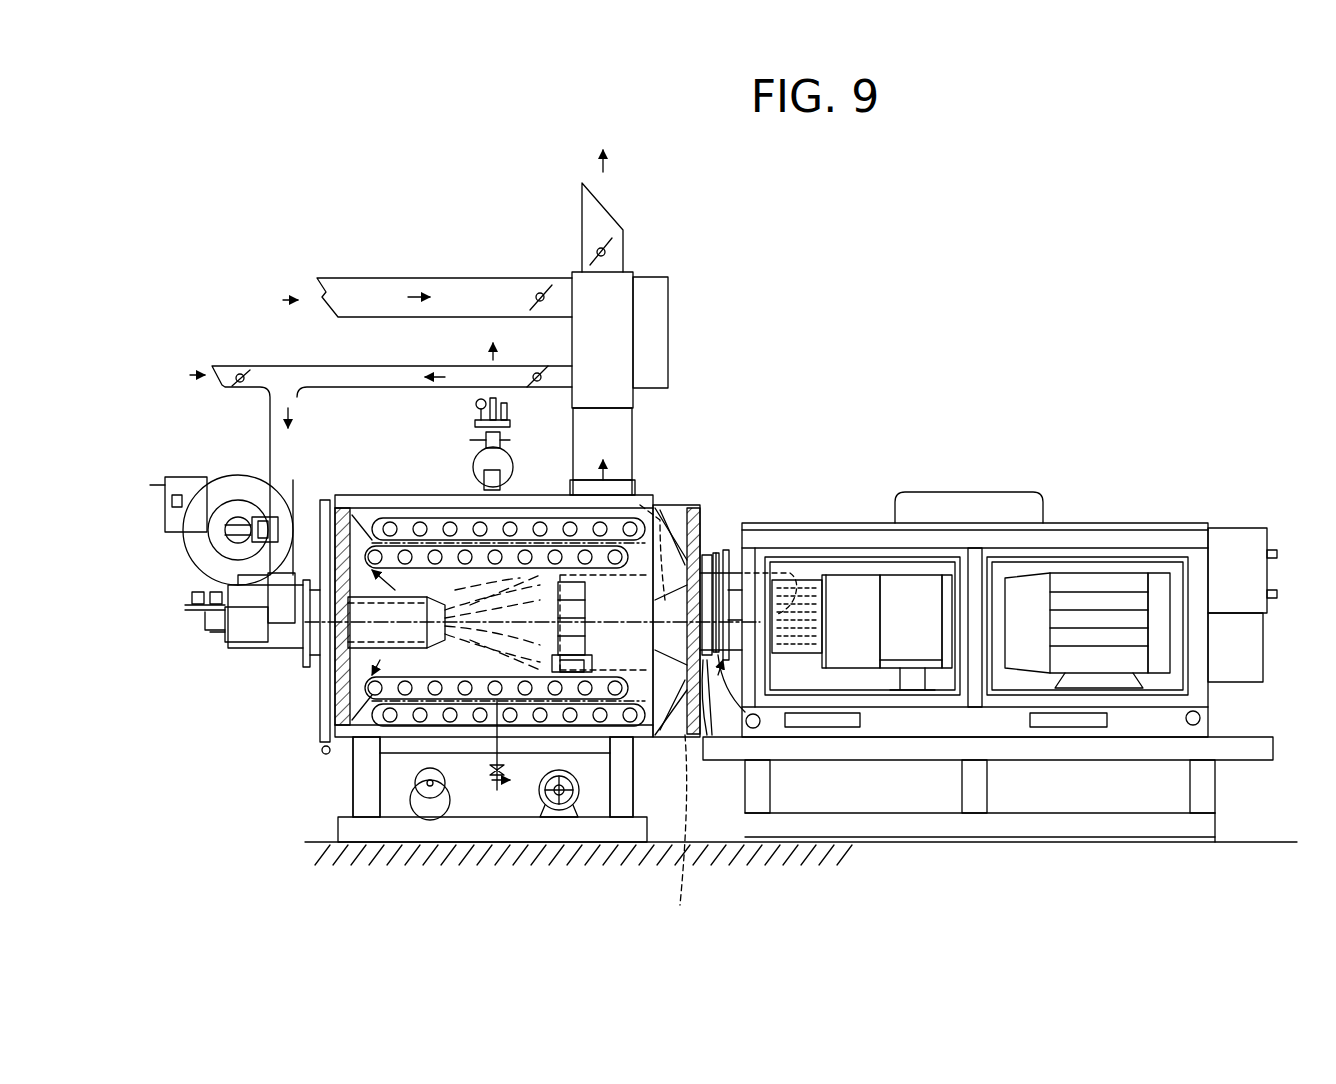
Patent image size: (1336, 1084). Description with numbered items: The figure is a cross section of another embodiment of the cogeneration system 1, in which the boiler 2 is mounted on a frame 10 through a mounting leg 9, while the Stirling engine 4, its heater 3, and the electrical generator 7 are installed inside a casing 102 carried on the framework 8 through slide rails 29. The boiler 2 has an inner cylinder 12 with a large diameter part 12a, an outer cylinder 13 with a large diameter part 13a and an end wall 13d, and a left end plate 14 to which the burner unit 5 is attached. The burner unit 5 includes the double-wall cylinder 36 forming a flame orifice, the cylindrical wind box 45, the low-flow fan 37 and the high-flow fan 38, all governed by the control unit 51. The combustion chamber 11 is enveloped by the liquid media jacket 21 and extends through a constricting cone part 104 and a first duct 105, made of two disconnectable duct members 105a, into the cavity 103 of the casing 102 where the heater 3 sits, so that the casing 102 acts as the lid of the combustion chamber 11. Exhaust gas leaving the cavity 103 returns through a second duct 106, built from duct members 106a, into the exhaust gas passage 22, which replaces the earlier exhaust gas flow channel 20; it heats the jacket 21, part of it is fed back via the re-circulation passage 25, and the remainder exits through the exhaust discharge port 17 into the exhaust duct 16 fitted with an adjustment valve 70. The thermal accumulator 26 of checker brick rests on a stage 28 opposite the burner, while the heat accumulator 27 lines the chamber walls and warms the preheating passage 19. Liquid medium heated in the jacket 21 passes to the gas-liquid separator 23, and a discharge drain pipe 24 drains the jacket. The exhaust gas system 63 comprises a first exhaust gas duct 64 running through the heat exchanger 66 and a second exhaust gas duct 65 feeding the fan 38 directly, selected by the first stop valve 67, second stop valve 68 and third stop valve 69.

The cogeneration system 1 is at (1052, 218).
The boiler 2 is at (305, 768).
The heater 3 is at (835, 580).
The Stirling engine 4 is at (912, 603).
The burner unit 5 is at (447, 595).
The electrical generator 7 is at (1103, 598).
The framework 8 is at (1203, 795).
The mounting leg 9 is at (355, 806).
The frame 10 is at (1265, 838).
The combustion chamber 11 is at (632, 745).
The inner cylinder 12 is at (465, 745).
The large diameter part of inner cylinder 12a is at (390, 730).
The outer cylinder 13 is at (535, 487).
The large diameter part of outer cylinder 13a is at (530, 755).
The end wall of outer cylinder 13d is at (707, 690).
The left end plate 14 is at (318, 728).
The exhaust duct 16 is at (623, 228).
The exhaust discharge port 17 is at (612, 490).
The preheating passage 19 is at (672, 515).
The exhaust gas flow channel 20 is at (775, 560).
The liquid media jacket 21 is at (618, 520).
The exhaust gas passage 22 is at (432, 525).
The gas-liquid separator 23 is at (473, 462).
The discharge drain pipe 24 is at (497, 790).
The re-circulation passage 25 is at (375, 575).
The thermal accumulator 26 is at (575, 612).
The heat accumulator 27 is at (700, 520).
The stage 28 is at (607, 760).
The slide rail 29 is at (1242, 742).
The double-wall cylinder 36 is at (390, 635).
The low-flow fan 37 is at (232, 590).
The high-flow fan 38 is at (225, 480).
The wind box 45 is at (270, 660).
The control unit 51 is at (162, 485).
The exhaust gas system 63 is at (258, 238).
The first exhaust gas duct 64 is at (362, 295).
The second exhaust gas duct 65 is at (228, 372).
The heat exchanger 66 is at (655, 318).
The first stop valve 67 is at (242, 372).
The second stop valve 68 is at (530, 295).
The third stop valve 69 is at (532, 372).
The adjustment valve 70 is at (612, 244).
The casing 102 is at (1160, 505).
The cavity 103 is at (800, 665).
The constricting cone part 104 is at (686, 833).
The first duct 105 is at (710, 660).
The duct member 105a is at (713, 665).
The second duct 106 is at (722, 545).
The duct member 106a is at (718, 545).